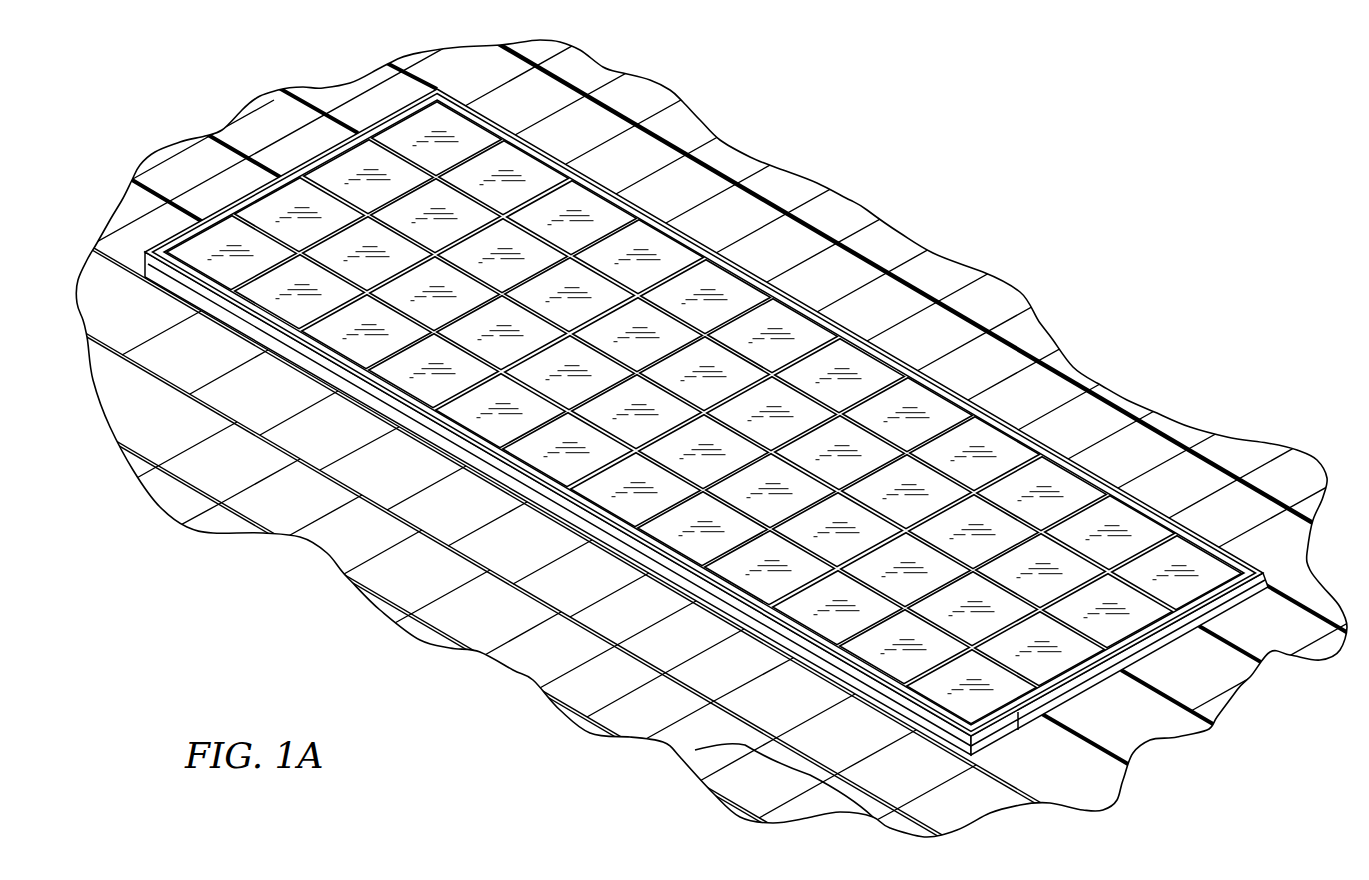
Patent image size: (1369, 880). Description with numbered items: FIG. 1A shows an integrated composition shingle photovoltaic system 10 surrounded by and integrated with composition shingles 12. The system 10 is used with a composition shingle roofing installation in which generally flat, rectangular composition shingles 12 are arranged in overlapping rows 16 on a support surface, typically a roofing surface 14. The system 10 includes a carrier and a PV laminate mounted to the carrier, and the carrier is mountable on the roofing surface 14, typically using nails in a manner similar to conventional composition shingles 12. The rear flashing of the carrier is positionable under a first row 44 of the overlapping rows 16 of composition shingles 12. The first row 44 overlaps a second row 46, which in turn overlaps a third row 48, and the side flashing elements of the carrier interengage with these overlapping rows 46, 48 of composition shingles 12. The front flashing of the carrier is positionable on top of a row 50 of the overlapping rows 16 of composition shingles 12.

The integrated composition shingle photovoltaic (PV) system 10 is at (727, 303).
The composition shingles 12 is at (987, 294).
The roofing surface 14 is at (698, 757).
The overlapping rows 16 is at (1227, 680).
The first row 44 is at (1135, 453).
The second row 46 is at (1262, 610).
The third row 48 is at (1212, 702).
The row 50 is at (1105, 773).